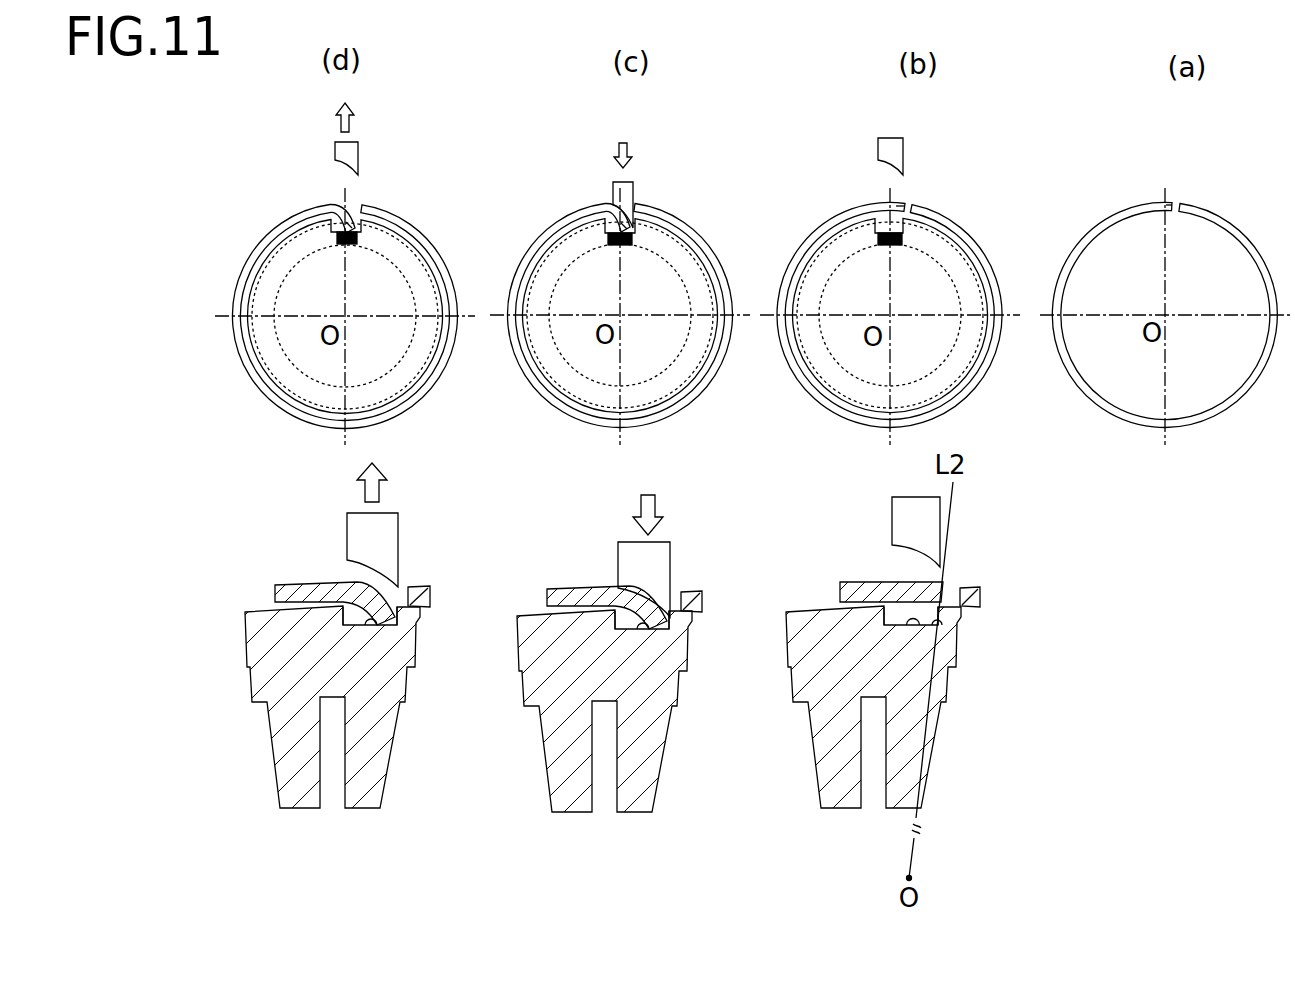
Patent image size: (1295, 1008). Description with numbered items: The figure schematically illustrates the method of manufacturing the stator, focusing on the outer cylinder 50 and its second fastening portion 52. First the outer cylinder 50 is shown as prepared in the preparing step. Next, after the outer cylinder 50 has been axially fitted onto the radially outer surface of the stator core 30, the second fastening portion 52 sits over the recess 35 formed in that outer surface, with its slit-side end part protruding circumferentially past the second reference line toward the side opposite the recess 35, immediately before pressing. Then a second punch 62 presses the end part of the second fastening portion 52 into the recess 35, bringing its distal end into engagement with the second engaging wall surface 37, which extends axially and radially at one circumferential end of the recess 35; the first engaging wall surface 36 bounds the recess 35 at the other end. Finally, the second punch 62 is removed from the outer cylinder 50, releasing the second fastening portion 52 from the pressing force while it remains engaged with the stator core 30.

The stator core 30 is at (285, 262).
The recess 35 is at (340, 214).
The first engaging wall surface 36 is at (349, 628).
The second engaging wall surface 37 is at (388, 628).
The outer cylinder 50 is at (420, 219).
The second fastening portion 52 is at (347, 222).
The second punch 62 is at (336, 152).